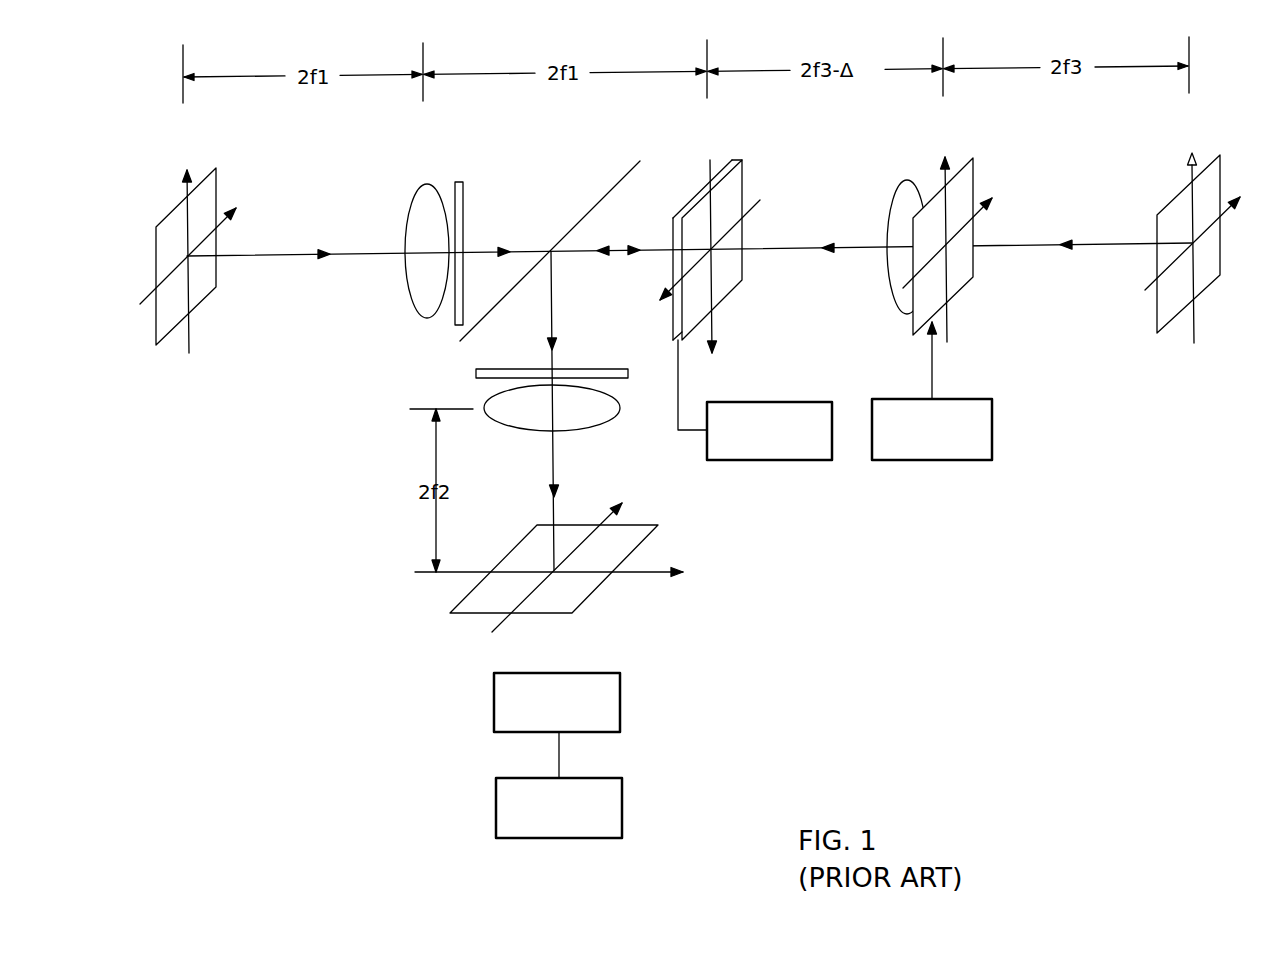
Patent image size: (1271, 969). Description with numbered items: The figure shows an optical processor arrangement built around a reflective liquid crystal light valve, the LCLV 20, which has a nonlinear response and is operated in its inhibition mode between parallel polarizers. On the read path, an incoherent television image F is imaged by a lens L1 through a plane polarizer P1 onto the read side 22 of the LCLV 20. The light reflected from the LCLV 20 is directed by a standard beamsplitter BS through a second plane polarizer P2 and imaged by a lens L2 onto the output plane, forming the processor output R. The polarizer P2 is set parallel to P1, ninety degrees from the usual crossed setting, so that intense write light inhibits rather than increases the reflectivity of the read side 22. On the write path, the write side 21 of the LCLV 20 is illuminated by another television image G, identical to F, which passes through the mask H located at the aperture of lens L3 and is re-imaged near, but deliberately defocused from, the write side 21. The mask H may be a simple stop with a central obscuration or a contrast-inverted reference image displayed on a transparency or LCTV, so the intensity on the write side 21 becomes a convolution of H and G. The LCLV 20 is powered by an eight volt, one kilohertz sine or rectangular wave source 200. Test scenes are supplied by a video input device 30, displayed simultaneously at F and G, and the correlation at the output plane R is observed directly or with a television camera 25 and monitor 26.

The liquid crystal light valve (LCLV) 20 is at (753, 235).
The write side of the LCLV 21 is at (742, 188).
The read side of the LCLV 22 is at (723, 170).
The 8 volt, 1 KHz sine or rectangular wave source 200 is at (777, 402).
The video input device 30 is at (967, 399).
The television camera 25 is at (622, 688).
The monitor 26 is at (623, 788).
The incoherent television image (read light intensity distribution) F is at (167, 215).
The lens L1 is at (410, 200).
The plane polarizer P1 is at (465, 205).
The beamsplitter BS is at (617, 187).
The plane polarizer P2 is at (476, 374).
The lens L2 is at (577, 430).
The output plane (processor output) R is at (587, 597).
The lens L3 is at (892, 200).
The mask (contrast-inverted reference image) H is at (977, 178).
The television image G is at (1223, 180).